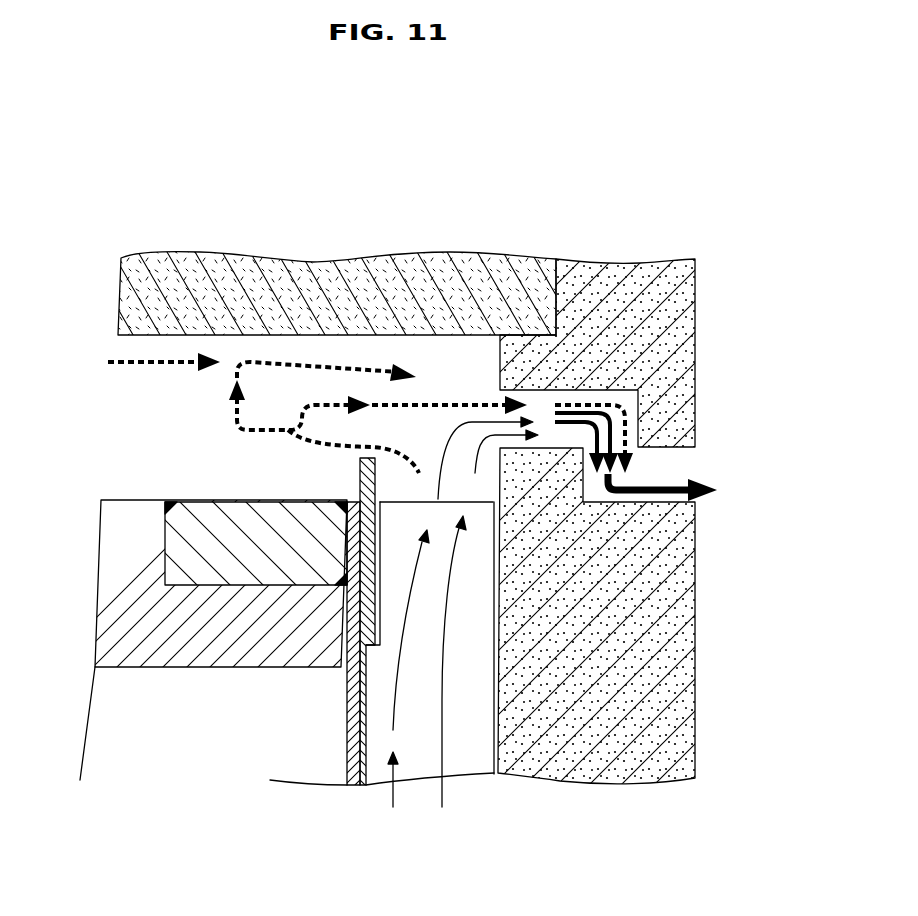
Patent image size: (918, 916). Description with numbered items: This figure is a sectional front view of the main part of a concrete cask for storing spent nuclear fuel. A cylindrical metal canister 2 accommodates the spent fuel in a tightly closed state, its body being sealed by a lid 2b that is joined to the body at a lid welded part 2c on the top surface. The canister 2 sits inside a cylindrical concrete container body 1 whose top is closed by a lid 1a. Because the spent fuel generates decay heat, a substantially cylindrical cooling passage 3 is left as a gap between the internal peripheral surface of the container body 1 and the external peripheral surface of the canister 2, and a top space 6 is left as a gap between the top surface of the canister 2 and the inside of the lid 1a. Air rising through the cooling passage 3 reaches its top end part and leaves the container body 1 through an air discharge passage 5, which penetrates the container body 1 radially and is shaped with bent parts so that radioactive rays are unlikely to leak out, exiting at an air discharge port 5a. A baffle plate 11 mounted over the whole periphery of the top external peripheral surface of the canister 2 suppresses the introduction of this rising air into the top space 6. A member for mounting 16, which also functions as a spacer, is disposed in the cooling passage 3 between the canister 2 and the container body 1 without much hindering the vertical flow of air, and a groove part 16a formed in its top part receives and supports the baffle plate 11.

The container body 1 is at (658, 585).
The lid 1a is at (300, 262).
The canister 2 is at (300, 783).
The lid 2b is at (87, 550).
The lid welded part 2c is at (170, 500).
The cooling passage 3 is at (480, 723).
The air discharge passage 5 is at (542, 392).
The air discharge port 5a is at (693, 462).
The top space 6 is at (230, 347).
The baffle plate 11 is at (358, 478).
The member for mounting 16 is at (431, 500).
The groove part 16a is at (378, 535).